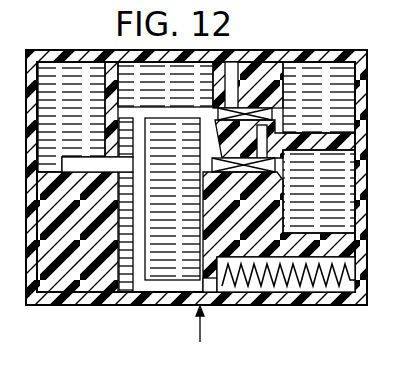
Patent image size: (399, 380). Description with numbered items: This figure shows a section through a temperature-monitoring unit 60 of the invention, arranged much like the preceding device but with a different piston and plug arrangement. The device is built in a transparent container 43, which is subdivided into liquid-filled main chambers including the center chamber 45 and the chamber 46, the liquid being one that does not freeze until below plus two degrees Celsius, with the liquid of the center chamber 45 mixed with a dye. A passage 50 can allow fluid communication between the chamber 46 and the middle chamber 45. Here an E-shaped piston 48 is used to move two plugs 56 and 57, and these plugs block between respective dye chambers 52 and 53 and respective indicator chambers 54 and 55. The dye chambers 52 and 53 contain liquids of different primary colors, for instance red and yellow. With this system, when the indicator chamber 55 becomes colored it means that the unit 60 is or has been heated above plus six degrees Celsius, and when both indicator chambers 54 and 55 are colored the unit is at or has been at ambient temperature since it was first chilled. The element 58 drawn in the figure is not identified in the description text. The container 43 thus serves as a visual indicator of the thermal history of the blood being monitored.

The transparent container 43 is at (60, 260).
The center chamber 45 is at (143, 95).
The main chamber 46 is at (63, 84).
The E-shaped piston 48 is at (340, 283).
The passage 50 is at (88, 235).
The dye chamber 52 is at (236, 70).
The dye chamber 53 is at (260, 124).
The indicator chamber 54 is at (328, 78).
The indicator chamber 55 is at (318, 200).
The plug 56 is at (246, 112).
The plug 57 is at (238, 262).
The piston 58 is at (183, 286).
The unit 60 is at (208, 336).